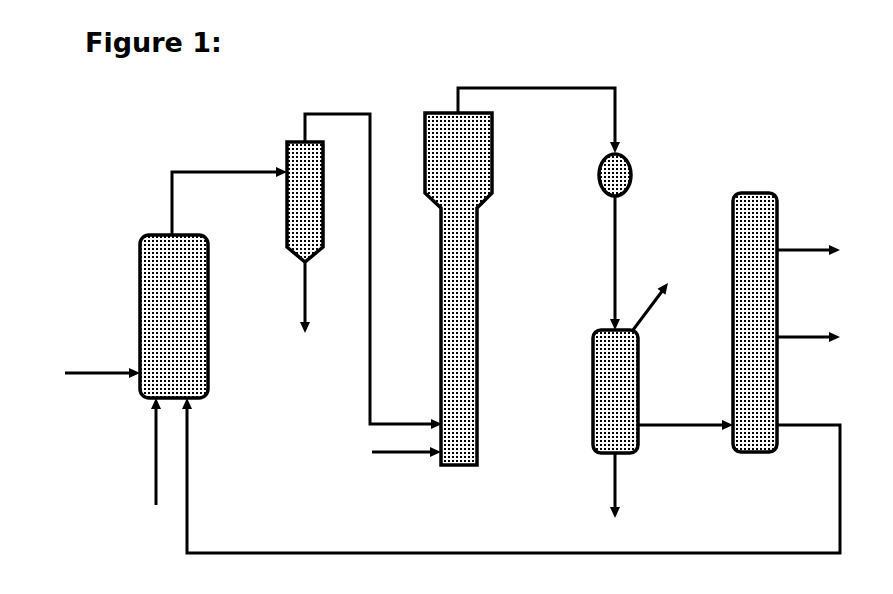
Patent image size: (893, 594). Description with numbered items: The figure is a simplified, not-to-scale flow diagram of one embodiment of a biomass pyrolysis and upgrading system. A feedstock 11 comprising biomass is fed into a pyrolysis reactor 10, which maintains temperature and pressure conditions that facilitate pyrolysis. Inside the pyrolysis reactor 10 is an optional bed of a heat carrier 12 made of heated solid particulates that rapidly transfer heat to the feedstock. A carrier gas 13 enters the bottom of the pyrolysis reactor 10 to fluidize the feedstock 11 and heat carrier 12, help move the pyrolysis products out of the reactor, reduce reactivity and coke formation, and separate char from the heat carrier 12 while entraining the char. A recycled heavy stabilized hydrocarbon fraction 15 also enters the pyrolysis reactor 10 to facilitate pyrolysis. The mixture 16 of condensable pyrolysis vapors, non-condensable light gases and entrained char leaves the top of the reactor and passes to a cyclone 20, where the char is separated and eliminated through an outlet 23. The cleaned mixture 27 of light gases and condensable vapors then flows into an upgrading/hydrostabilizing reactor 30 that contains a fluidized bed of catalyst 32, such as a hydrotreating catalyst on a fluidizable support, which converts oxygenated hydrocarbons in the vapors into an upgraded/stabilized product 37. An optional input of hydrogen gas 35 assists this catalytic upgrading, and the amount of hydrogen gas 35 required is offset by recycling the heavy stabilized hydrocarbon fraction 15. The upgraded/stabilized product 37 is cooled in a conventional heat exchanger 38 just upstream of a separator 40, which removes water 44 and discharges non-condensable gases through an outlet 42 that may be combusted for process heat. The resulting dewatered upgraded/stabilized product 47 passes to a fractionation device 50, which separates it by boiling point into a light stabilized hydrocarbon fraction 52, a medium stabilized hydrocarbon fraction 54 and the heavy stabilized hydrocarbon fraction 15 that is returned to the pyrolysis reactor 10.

The pyrolysis reactor 10 is at (152, 316).
The feedstock 11 is at (86, 374).
The heat carrier 12 is at (140, 253).
The carrier gas 13 is at (163, 470).
The heavy stabilized hydrocarbon fraction 15 is at (511, 475).
The mixture 16 is at (229, 191).
The cyclone 20 is at (275, 195).
The outlet 23 is at (293, 297).
The cleaned mixture 27 is at (373, 271).
The upgrading/hydrostabilizing reactor 30 is at (476, 289).
The catalyst 32 is at (505, 280).
The hydrogen gas 35 is at (393, 455).
The upgraded/stabilized product 37 is at (539, 108).
The heat exchanger 38 is at (631, 170).
The separator 40 is at (593, 373).
The outlet 42 is at (658, 305).
The water 44 is at (630, 485).
The dewatered upgraded/stabilized product 47 is at (685, 415).
The fractionation device 50 is at (733, 220).
The light stabilized hydrocarbon fraction 52 is at (808, 237).
The medium stabilized hydrocarbon fraction 54 is at (808, 326).